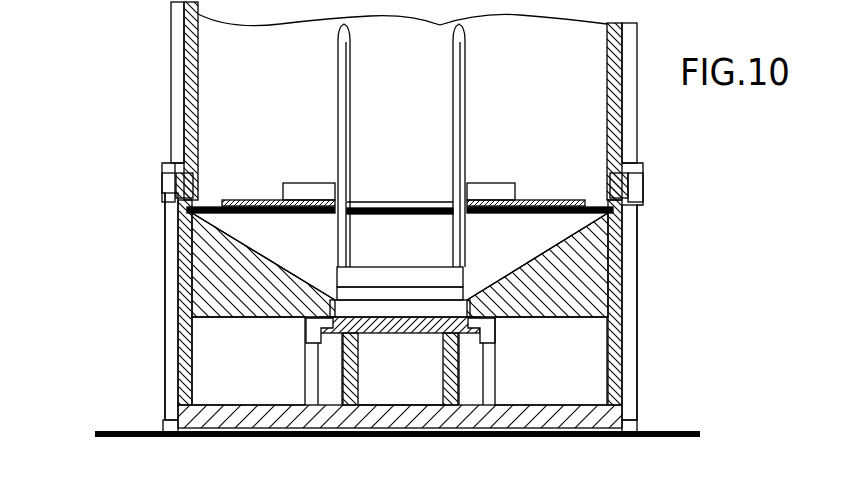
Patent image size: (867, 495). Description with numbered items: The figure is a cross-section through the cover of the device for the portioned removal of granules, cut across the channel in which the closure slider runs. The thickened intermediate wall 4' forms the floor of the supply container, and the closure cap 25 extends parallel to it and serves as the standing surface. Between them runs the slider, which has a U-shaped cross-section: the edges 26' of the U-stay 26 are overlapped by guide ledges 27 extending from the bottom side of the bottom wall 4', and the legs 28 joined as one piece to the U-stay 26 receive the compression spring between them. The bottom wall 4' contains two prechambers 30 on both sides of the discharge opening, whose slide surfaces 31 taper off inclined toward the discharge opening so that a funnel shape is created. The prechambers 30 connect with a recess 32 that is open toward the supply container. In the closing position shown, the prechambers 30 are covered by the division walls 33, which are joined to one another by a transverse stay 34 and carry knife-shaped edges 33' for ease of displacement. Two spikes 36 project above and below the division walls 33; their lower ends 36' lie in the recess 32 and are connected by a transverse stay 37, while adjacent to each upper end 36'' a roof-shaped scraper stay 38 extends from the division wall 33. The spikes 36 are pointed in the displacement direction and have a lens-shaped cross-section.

The intermediate wall 4' is at (666, 227).
The closure cap 25 is at (215, 432).
The U-stay 26 is at (400, 387).
The edges of the U-stay 26' is at (394, 348).
The guide ledges 27 is at (320, 333).
The legs 28 is at (353, 340).
The prechambers 30 is at (285, 255).
The slide surfaces 31 is at (292, 275).
The recess 32 is at (405, 305).
The division walls 33 is at (392, 134).
The knife-shaped edges 33' is at (395, 160).
The transverse stay 34 is at (401, 207).
The spikes 36 is at (399, 148).
The lower ends of the spikes 36' is at (395, 252).
The upper ends of the spikes 36'' is at (399, 138).
The transverse stay 37 is at (375, 335).
The scraper stay 38 is at (300, 183).